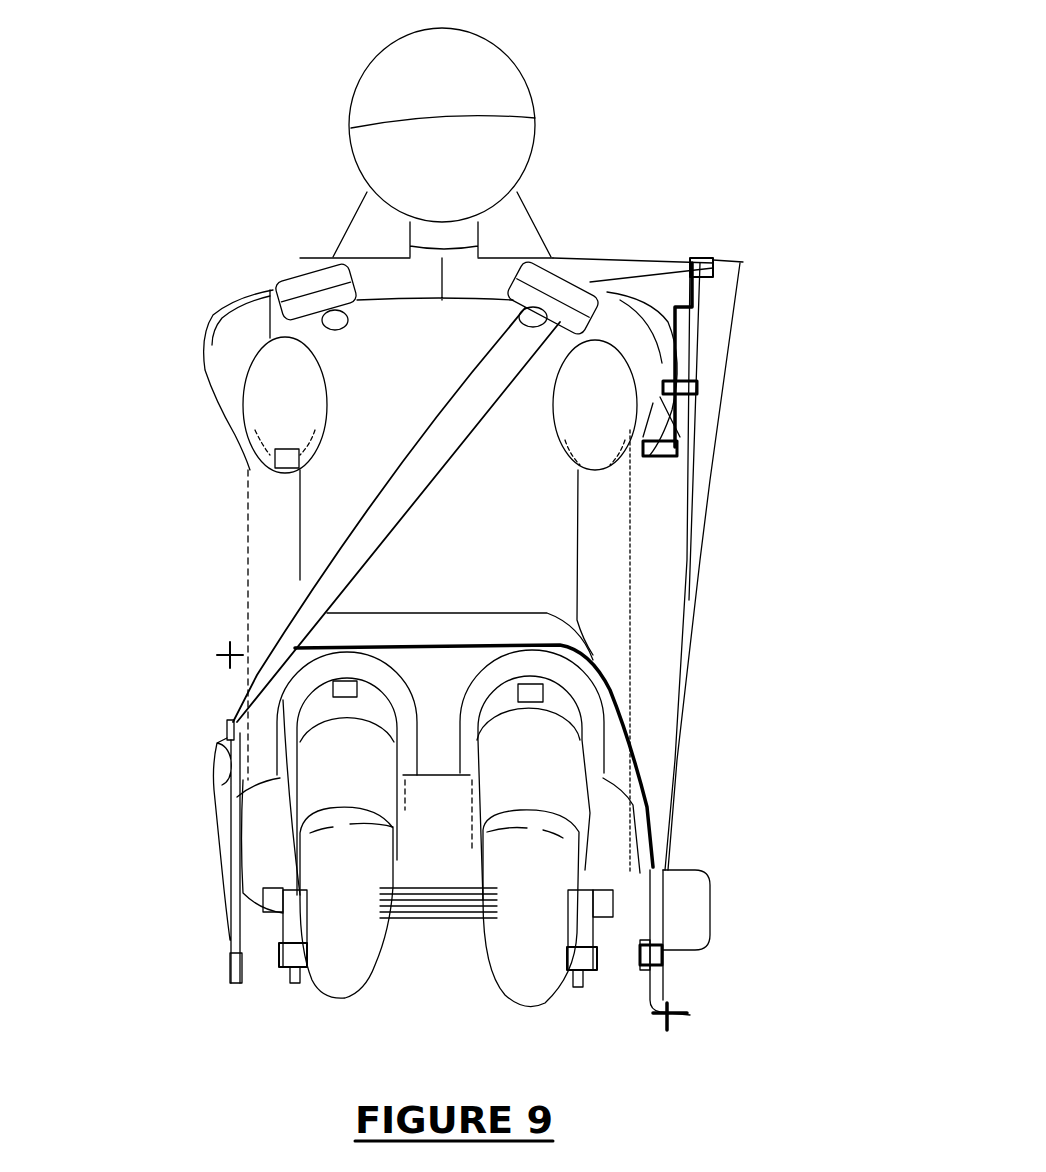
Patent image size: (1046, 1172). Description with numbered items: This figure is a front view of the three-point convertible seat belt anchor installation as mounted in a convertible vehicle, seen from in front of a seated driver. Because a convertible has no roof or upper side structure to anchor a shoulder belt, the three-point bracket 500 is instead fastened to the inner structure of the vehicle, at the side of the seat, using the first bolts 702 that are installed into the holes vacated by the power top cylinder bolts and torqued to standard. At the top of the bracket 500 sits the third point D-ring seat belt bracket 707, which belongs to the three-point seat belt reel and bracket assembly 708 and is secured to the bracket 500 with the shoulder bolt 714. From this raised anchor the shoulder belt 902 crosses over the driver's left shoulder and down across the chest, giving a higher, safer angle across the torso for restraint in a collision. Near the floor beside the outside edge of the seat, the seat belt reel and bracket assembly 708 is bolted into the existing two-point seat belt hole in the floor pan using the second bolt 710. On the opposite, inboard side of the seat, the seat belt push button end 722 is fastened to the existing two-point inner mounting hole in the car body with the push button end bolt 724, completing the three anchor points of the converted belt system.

The three-point bracket 500 is at (690, 272).
The first bolts 702 is at (680, 390).
The third point D-ring seat belt bracket 707 is at (728, 258).
The three-point seat belt reel and bracket assembly 708 is at (690, 918).
The second bolt 710 is at (665, 1018).
The shoulder bolt 714 is at (710, 257).
The seat belt push button end 722 is at (217, 827).
The push button end bolt 724 is at (233, 957).
The shoulder belt 902 is at (375, 512).